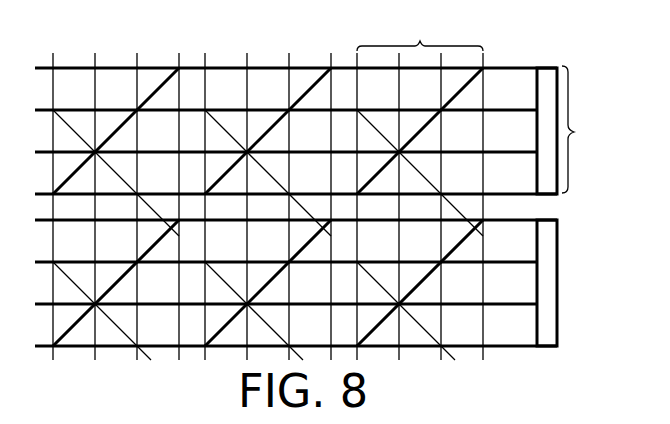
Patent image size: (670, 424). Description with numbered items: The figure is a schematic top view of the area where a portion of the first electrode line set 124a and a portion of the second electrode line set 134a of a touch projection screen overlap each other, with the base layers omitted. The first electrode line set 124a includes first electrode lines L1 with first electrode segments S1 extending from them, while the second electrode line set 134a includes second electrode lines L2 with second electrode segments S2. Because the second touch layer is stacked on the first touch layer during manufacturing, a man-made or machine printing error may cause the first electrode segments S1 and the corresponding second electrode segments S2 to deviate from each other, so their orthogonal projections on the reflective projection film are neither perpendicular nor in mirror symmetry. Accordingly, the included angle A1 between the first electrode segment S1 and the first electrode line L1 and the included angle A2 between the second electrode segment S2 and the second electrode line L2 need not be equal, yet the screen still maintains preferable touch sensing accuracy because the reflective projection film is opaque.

The first electrode line L1 is at (524, 66).
The second electrode line L2 is at (357, 83).
The first electrode segment S1 is at (451, 98).
The second electrode segment S2 is at (372, 124).
The included angle A1 is at (221, 181).
The included angle A2 is at (331, 216).
The second electrode line set 134a is at (420, 30).
The first electrode line set 124a is at (582, 206).